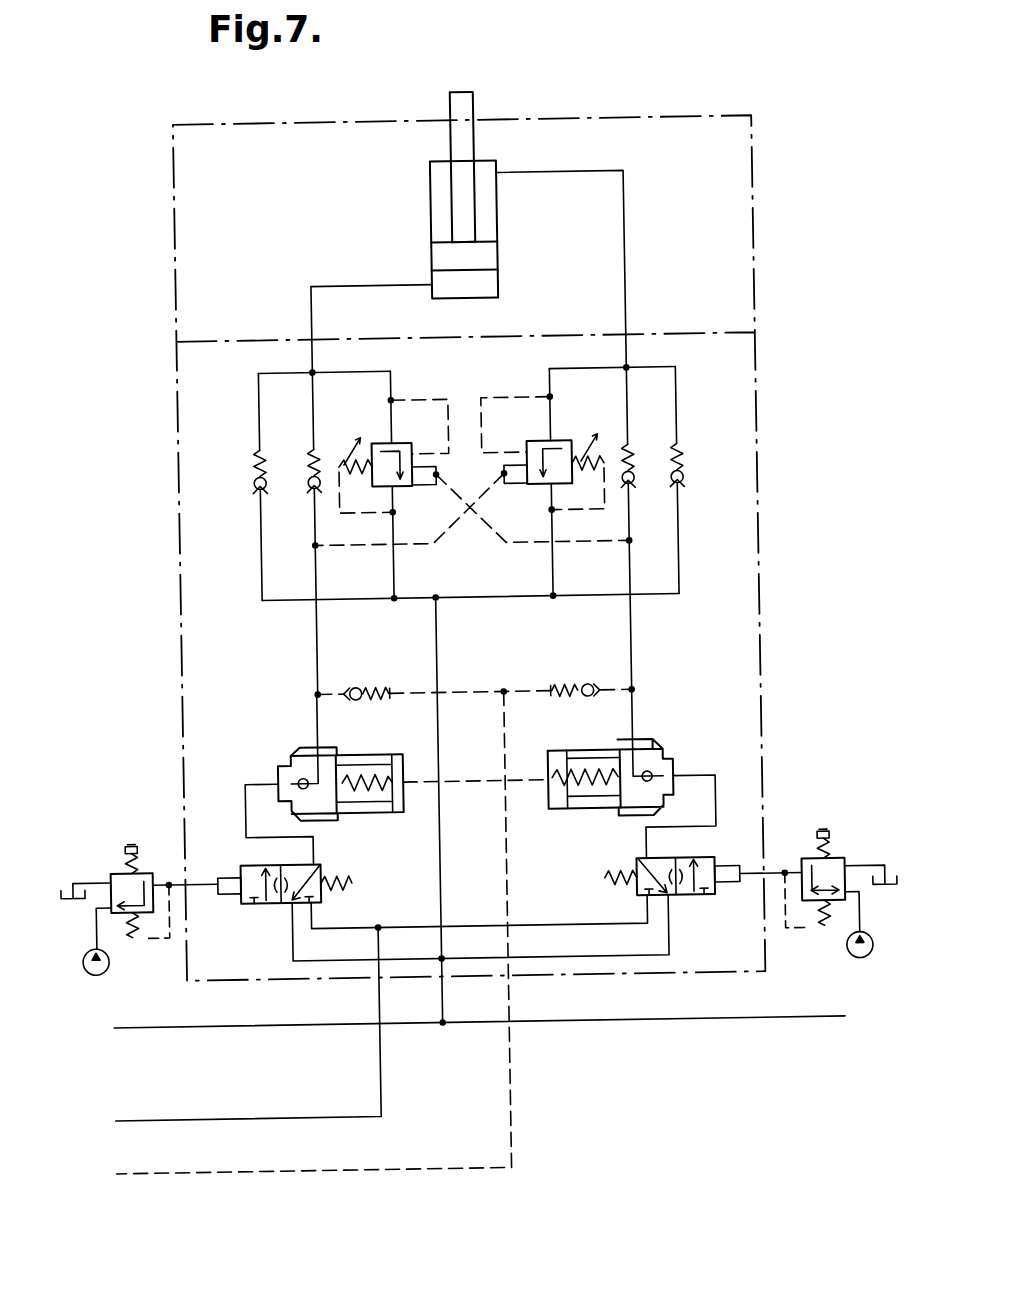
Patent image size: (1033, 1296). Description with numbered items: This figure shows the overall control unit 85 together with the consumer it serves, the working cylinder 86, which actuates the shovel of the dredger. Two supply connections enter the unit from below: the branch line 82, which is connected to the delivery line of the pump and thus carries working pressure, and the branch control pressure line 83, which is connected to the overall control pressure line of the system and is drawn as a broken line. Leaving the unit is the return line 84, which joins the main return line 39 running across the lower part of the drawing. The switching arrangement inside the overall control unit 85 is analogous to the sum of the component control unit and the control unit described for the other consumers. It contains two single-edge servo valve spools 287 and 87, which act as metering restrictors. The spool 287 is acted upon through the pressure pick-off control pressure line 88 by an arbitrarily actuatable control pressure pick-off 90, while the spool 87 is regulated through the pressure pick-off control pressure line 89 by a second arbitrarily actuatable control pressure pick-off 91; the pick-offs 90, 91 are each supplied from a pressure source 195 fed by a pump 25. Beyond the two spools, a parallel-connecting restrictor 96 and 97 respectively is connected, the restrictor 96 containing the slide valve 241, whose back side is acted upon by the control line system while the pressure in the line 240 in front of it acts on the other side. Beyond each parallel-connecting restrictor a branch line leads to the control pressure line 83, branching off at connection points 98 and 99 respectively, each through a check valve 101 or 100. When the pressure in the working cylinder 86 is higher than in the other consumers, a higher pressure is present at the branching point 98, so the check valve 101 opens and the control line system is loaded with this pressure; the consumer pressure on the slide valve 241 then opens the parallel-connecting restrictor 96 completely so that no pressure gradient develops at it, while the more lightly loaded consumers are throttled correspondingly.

The working cylinder 86 is at (438, 227).
The overall control unit 85 is at (761, 470).
The connection point 99 is at (316, 692).
The check valve 100 is at (374, 698).
The check valve 101 is at (584, 702).
The connection point 98 is at (632, 693).
The parallel-connecting restrictor 97 is at (299, 752).
The parallel-connecting restrictor 96 is at (660, 754).
The line 240 is at (734, 768).
The slide valve 241 is at (590, 810).
The control pressure pick-off 91 is at (106, 867).
The pressure pick-off control pressure line 89 is at (203, 880).
The single-edge servo valve spool 87 is at (271, 900).
The pressure supply line 195 is at (92, 931).
The pump 25 is at (97, 968).
The pressure pick-off control pressure line 88 is at (750, 878).
The single-edge servo valve spool 287 is at (693, 899).
The control pressure pick-off 90 is at (841, 864).
The return line 84 is at (439, 1000).
The return line 39 is at (612, 1024).
The branch line 82 is at (373, 1085).
The branch control pressure line 83 is at (504, 1080).